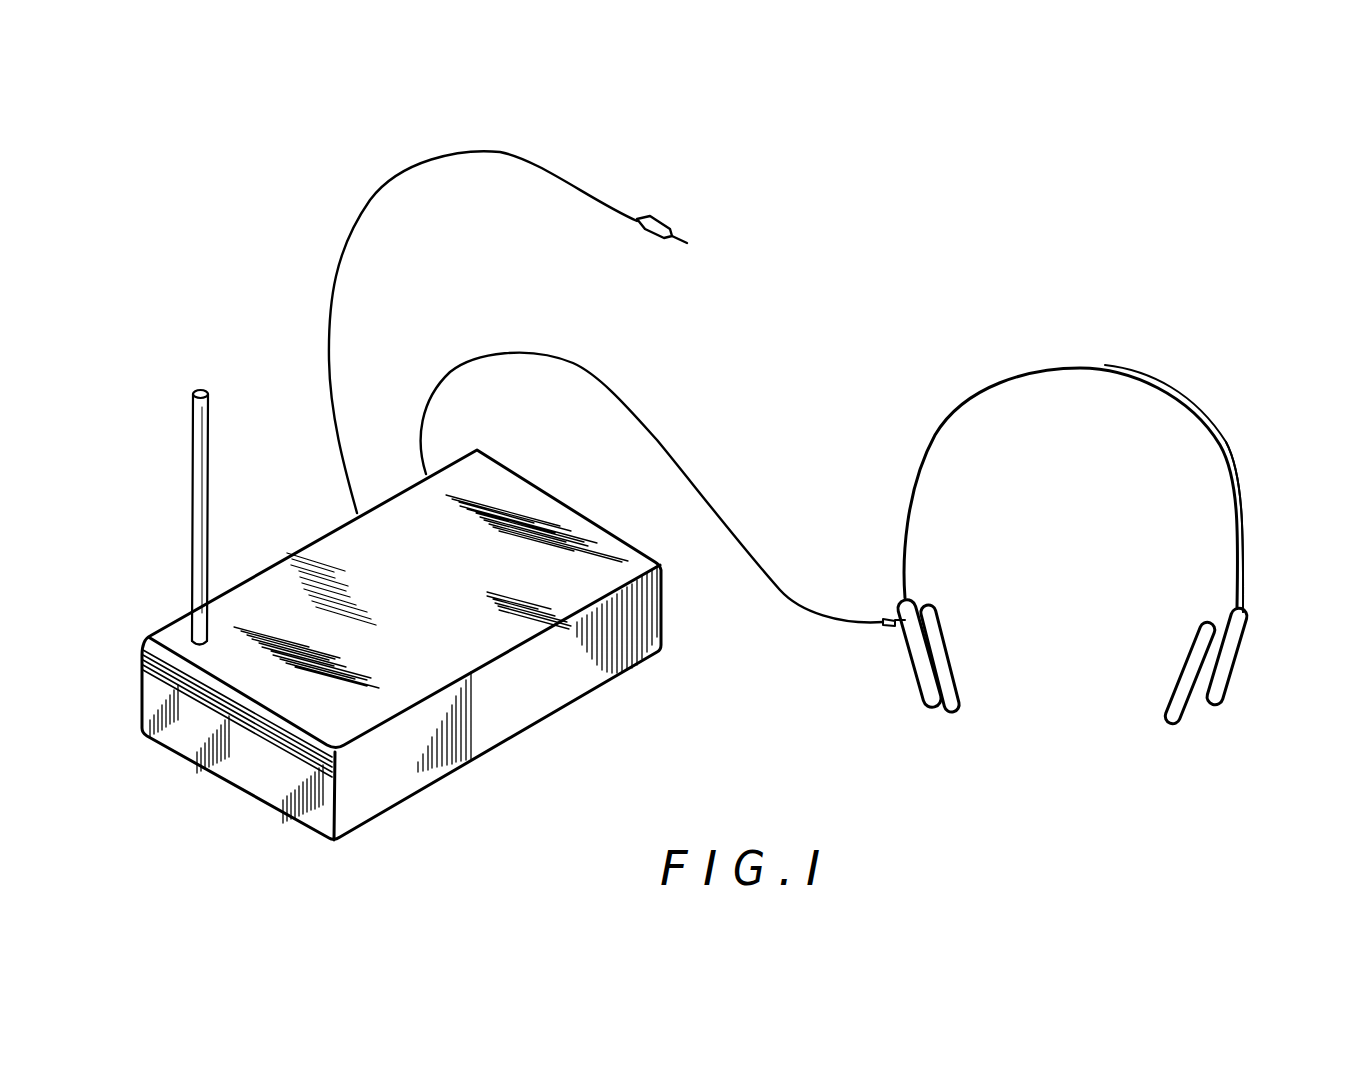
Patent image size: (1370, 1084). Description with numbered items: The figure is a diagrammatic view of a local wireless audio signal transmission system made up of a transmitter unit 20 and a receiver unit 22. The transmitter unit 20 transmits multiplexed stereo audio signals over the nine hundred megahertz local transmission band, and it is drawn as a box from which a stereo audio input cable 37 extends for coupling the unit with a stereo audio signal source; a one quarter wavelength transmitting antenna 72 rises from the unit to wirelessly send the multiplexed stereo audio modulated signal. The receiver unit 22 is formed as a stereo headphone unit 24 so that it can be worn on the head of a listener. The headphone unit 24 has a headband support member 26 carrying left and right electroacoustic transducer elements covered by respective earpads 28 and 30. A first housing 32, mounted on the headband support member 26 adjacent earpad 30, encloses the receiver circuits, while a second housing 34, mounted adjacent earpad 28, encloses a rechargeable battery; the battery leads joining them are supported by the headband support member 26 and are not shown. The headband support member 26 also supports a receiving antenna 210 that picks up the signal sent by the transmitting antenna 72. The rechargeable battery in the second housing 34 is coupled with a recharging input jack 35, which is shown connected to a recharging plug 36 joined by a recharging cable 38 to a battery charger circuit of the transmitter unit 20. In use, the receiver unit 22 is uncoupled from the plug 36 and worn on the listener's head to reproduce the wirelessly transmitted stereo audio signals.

The transmitter unit 20 is at (433, 612).
The transmitting antenna 72 is at (192, 458).
The stereo audio input cable 37 is at (390, 182).
The recharging cable 38 is at (660, 397).
The receiver unit 22 is at (1090, 302).
The stereo headphone unit 24 is at (990, 407).
The headband support member 26 is at (1173, 394).
The receiving antenna 210 is at (1219, 432).
The earpad 28 is at (953, 660).
The earpad 30 is at (1185, 680).
The first housing 32 is at (1235, 660).
The second housing 34 is at (913, 683).
The recharging input jack 35 is at (890, 637).
The recharging plug 36 is at (890, 620).